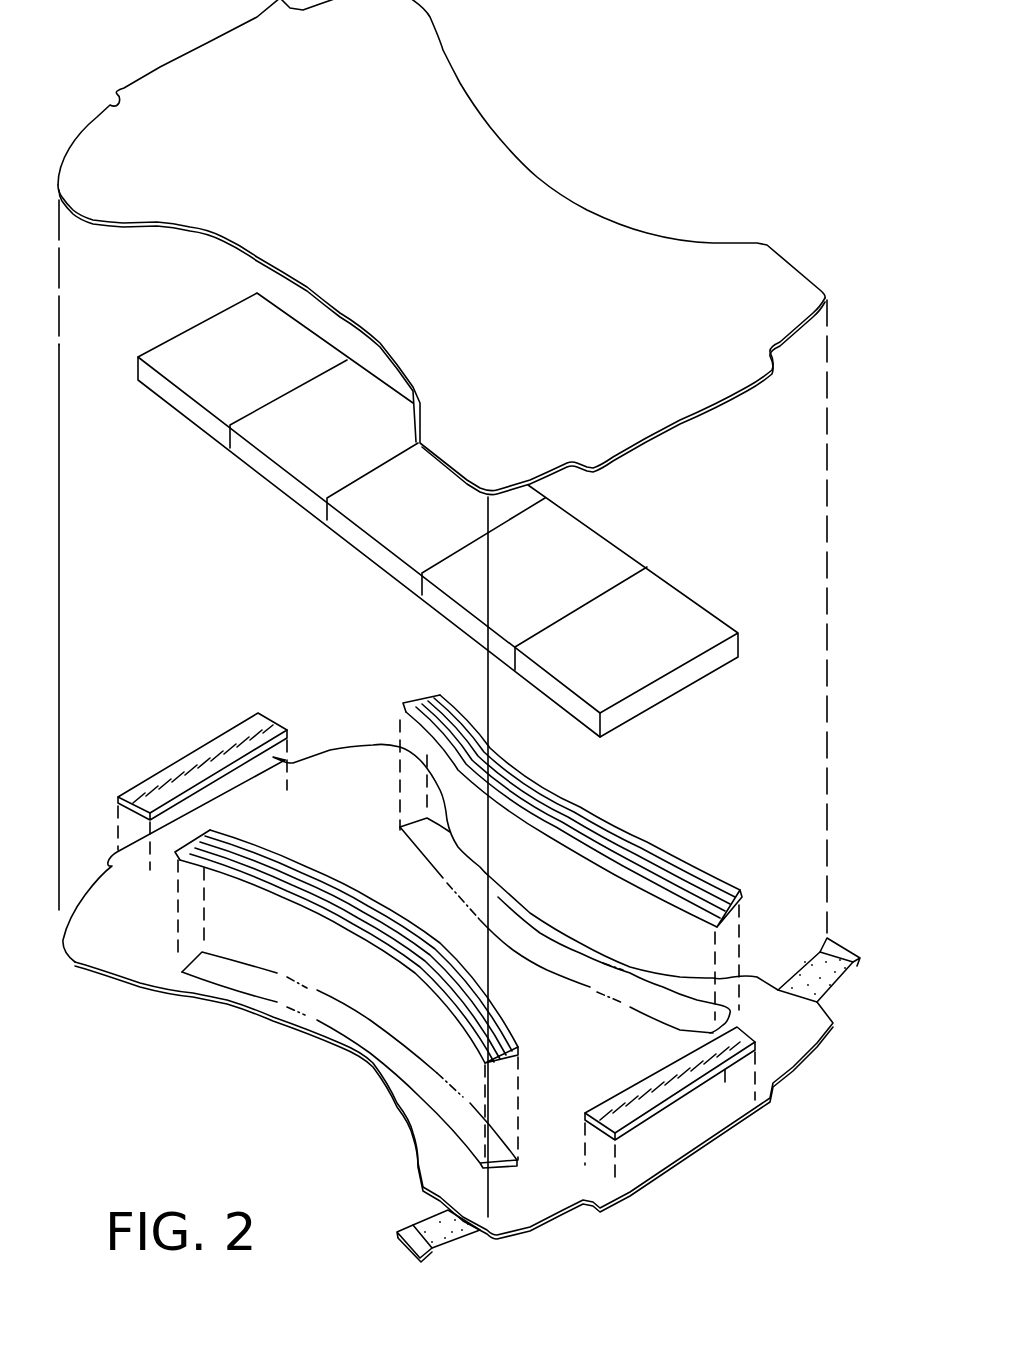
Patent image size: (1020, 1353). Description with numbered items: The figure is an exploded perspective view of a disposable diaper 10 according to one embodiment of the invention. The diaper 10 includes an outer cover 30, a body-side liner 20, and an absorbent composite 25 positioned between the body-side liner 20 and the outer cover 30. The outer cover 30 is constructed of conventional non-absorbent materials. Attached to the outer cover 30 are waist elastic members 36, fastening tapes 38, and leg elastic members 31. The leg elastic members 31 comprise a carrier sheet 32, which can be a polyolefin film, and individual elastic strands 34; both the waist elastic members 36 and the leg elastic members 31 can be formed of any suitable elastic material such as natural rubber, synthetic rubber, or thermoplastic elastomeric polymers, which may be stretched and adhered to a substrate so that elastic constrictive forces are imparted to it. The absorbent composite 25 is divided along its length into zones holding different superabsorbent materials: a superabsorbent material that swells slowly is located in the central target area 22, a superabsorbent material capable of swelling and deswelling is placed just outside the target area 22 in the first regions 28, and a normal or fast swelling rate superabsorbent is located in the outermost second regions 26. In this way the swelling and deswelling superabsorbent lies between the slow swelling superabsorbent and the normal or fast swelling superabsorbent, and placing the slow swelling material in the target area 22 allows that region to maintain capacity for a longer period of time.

The disposable diaper 10 is at (716, 152).
The body-side liner 20 is at (535, 172).
The target area 22 is at (392, 535).
The absorbent composite 25 is at (645, 565).
The second regions 26 is at (235, 408).
The first regions 28 is at (298, 455).
The outer cover 30 is at (90, 973).
The leg elastic members 31 is at (300, 857).
The carrier sheet 32 is at (460, 1030).
The elastic strands 34 is at (370, 938).
The waist elastic members 36 is at (187, 757).
The fastening tapes 38 is at (843, 990).